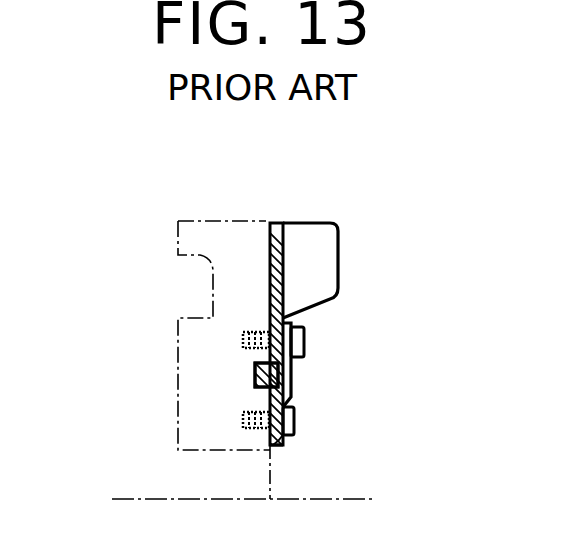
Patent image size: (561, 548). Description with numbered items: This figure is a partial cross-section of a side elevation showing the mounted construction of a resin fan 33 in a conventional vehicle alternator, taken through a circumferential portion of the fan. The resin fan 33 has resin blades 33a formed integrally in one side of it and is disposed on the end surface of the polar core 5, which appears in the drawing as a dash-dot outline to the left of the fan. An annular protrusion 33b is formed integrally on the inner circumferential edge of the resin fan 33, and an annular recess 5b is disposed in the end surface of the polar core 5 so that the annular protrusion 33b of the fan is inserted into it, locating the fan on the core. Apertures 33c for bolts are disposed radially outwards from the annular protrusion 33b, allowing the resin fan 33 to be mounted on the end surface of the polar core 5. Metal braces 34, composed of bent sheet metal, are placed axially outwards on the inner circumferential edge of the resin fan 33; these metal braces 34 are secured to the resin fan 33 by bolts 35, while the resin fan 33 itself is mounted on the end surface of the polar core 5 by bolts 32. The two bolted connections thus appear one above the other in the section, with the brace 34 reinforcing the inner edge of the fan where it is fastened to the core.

The polar core 5 is at (192, 235).
The annular recess 5b is at (255, 375).
The resin fan 33 is at (280, 222).
The resin blades 33a is at (338, 238).
The annular protrusion 33b is at (255, 382).
The apertures for bolts 33c is at (303, 338).
The bolts 35 is at (306, 347).
The bolts 32 is at (295, 412).
The metal braces 34 is at (282, 445).